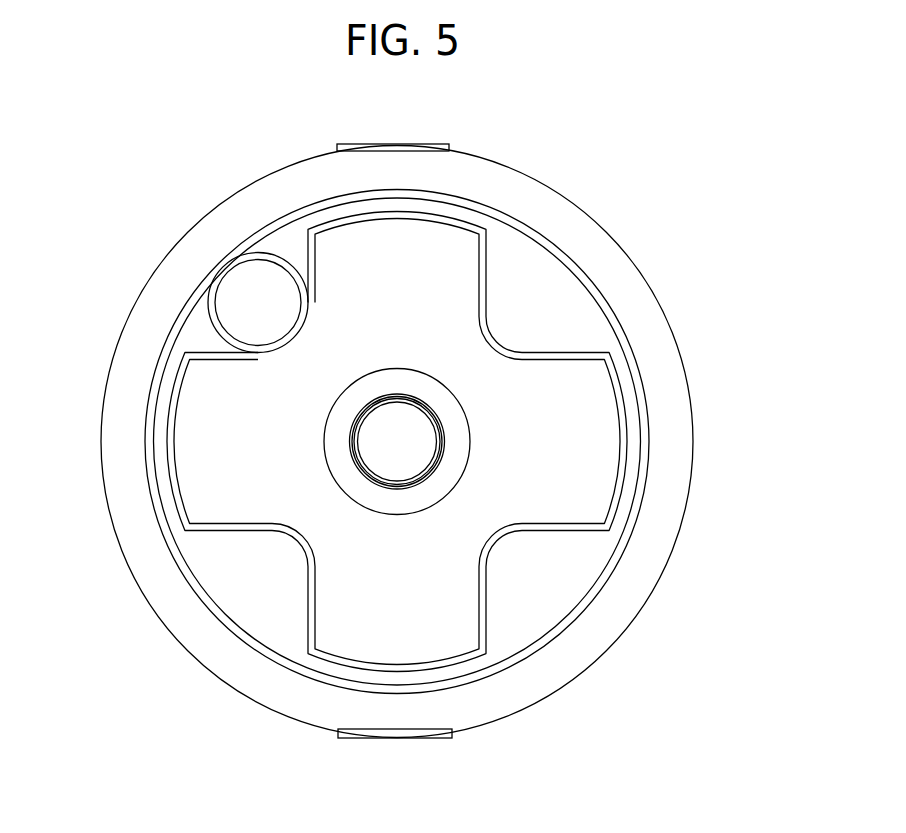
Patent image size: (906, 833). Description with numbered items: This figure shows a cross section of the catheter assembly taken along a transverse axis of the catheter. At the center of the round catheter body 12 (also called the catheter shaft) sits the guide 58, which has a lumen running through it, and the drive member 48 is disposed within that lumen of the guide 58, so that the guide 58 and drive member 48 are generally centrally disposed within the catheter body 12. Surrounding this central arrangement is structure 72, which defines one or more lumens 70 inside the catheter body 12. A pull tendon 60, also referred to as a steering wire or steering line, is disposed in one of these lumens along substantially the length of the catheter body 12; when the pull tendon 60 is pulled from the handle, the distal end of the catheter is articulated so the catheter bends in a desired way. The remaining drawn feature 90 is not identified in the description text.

The catheter body 12 is at (563, 217).
The drive member 48 is at (403, 433).
The guide 58 is at (442, 470).
The pull tendon 60 is at (240, 307).
The lumens 70 is at (289, 249).
The structure 72 is at (487, 288).
The channel 90 is at (527, 583).